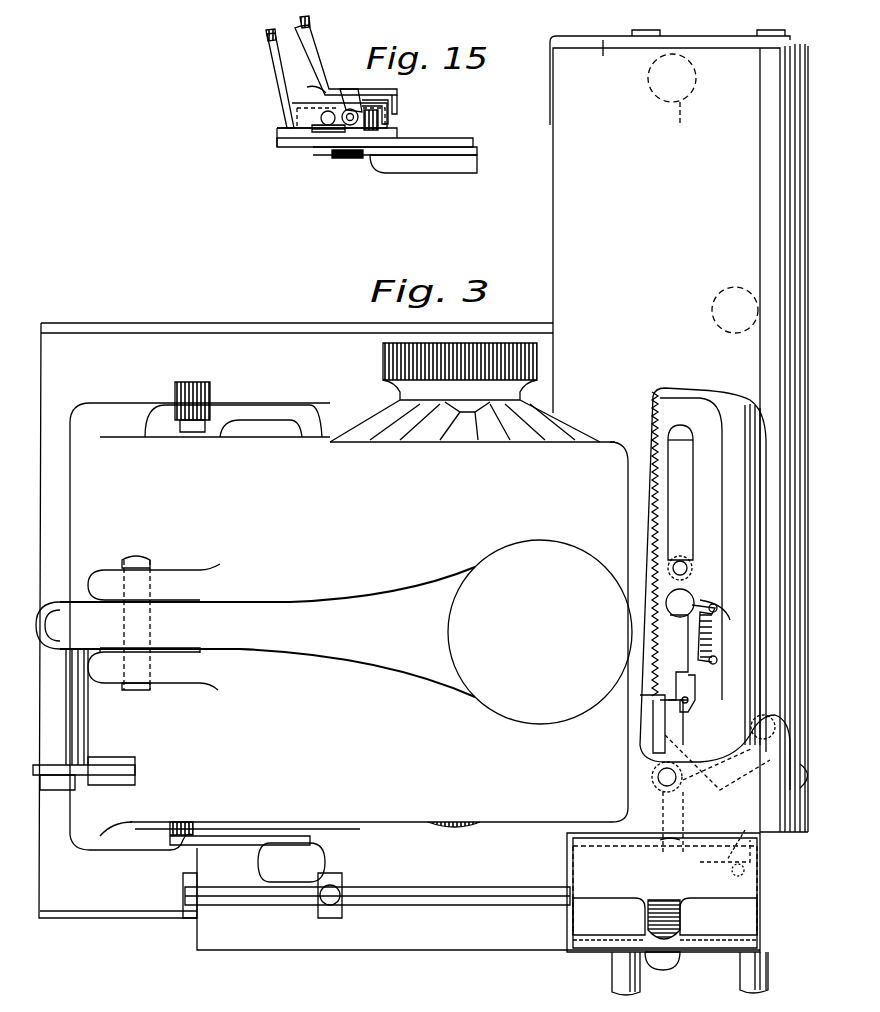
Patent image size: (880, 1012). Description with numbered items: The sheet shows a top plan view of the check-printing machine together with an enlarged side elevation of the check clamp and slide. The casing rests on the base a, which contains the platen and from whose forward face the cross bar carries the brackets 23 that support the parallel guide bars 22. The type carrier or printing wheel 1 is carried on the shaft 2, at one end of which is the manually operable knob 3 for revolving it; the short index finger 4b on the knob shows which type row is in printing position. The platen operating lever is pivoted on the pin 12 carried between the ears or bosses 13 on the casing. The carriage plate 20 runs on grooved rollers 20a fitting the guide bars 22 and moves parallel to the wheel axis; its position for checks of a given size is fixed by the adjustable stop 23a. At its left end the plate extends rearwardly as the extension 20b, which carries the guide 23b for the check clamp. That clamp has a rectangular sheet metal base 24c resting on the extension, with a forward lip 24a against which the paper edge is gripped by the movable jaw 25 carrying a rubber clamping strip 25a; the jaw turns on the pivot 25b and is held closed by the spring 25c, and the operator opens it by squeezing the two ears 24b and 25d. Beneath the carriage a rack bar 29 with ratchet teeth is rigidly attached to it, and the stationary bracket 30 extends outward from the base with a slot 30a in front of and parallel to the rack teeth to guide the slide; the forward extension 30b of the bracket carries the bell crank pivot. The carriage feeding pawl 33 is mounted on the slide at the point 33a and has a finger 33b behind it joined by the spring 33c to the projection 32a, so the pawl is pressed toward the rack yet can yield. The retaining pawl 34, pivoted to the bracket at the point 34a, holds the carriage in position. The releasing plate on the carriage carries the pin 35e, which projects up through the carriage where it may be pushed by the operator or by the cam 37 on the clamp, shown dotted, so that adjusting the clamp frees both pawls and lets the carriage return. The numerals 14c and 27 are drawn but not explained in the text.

In FIG. 3, the type carrier or printing wheel 1 is at (349, 626).
In FIG. 3, the shaft 2 is at (455, 830).
In FIG. 3, the type selecting member or knob 3 is at (385, 352).
In FIG. 3, the short index finger 4b is at (400, 396).
In FIG. 3, the pin 12 is at (134, 558).
In FIG. 3, the ears or bosses 13 is at (154, 625).
In FIG. 3, the bracket 14c is at (72, 728).
In FIG. 3, the carriage plate 20 is at (679, 431).
In FIG. 3, the rollers 20a is at (703, 193).
In FIG. 3, the rearward extension of carriage plate 20b is at (478, 896).
In FIG. 3, the guide bars 22 is at (625, 972).
In FIG. 3, the brackets 23 is at (601, 62).
In FIG. 3, the adjustable stop 23a is at (328, 918).
In FIG. 15, the guide 23b is at (321, 123).
In FIG. 3, the guide 23b is at (448, 905).
In FIG. 15, the lip or extension 24a is at (397, 129).
In FIG. 15, the ear 24b is at (268, 37).
In FIG. 3, the ear 24b is at (674, 960).
In FIG. 15, the base 24c is at (296, 114).
In FIG. 3, the base 24c is at (609, 919).
In FIG. 15, the movable jaw 25 is at (402, 112).
In FIG. 3, the movable jaw 25 is at (663, 892).
In FIG. 15, the rubber clamping strip 25a is at (392, 117).
In FIG. 15, the pivot 25b is at (350, 90).
In FIG. 15, the spring 25c is at (308, 83).
In FIG. 15, the ear 25d is at (309, 27).
In FIG. 3, the ear 25d is at (683, 915).
In FIG. 3, the base 27 is at (122, 782).
In FIG. 3, the rack bar 29 is at (646, 516).
In FIG. 3, the stationary bracket 30 is at (709, 570).
In FIG. 3, the slot 30a is at (672, 440).
In FIG. 3, the forward extension of bracket 30b is at (687, 753).
In FIG. 3, the projection 32a is at (697, 680).
In FIG. 3, the carriage feeding pawl 33 is at (672, 636).
In FIG. 3, the pivot point of feeding pawl 33a is at (670, 597).
In FIG. 3, the extension or finger 33b is at (705, 570).
In FIG. 3, the spring 33c is at (725, 592).
In FIG. 3, the retaining pawl 34 is at (660, 722).
In FIG. 3, the pivot point of retaining pawl 34a is at (680, 836).
In FIG. 15, the pin 35e is at (370, 126).
In FIG. 3, the pin 35e is at (735, 872).
In FIG. 15, the cam 37 is at (371, 132).
In FIG. 3, the cam 37 is at (739, 836).
In FIG. 3, the base a is at (116, 837).